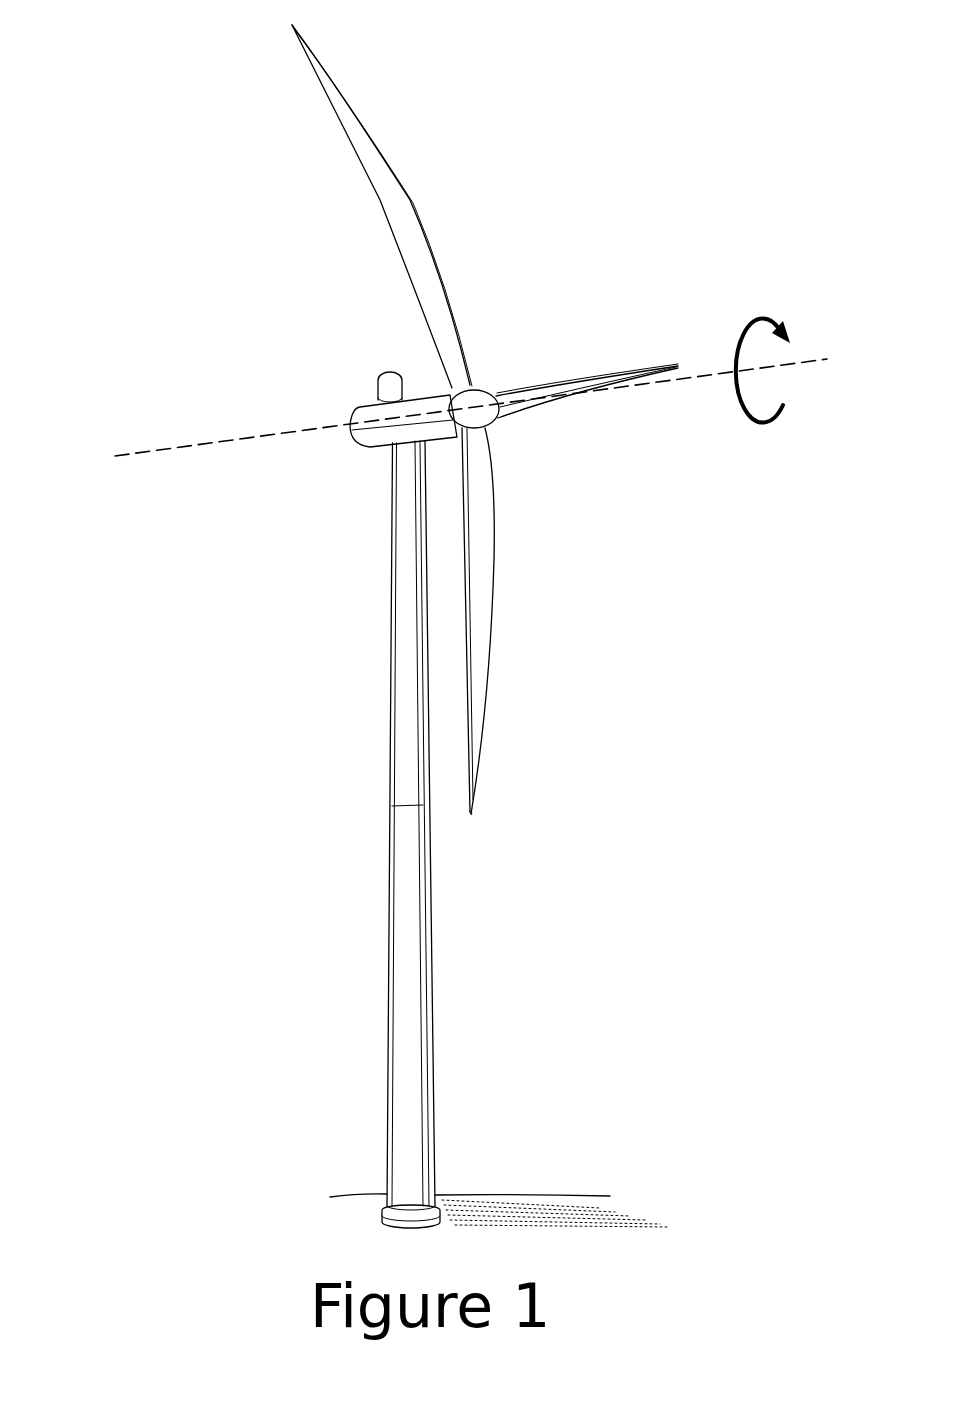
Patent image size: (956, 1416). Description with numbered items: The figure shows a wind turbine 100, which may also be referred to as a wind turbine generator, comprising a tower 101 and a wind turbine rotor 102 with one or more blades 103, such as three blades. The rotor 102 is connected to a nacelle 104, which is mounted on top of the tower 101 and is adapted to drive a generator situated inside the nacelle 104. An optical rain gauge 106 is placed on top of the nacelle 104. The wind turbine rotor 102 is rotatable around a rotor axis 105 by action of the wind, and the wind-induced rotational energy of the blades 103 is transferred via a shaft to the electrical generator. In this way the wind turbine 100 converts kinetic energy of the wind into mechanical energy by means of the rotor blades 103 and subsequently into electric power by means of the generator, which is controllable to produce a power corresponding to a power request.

The wind turbine 100 is at (700, 978).
The tower 101 is at (403, 993).
The wind turbine rotor 102 is at (536, 298).
The blades 103 is at (483, 652).
The nacelle 104 is at (373, 413).
The rotor axis 105 is at (215, 440).
The optical rain gauge 106 is at (390, 383).